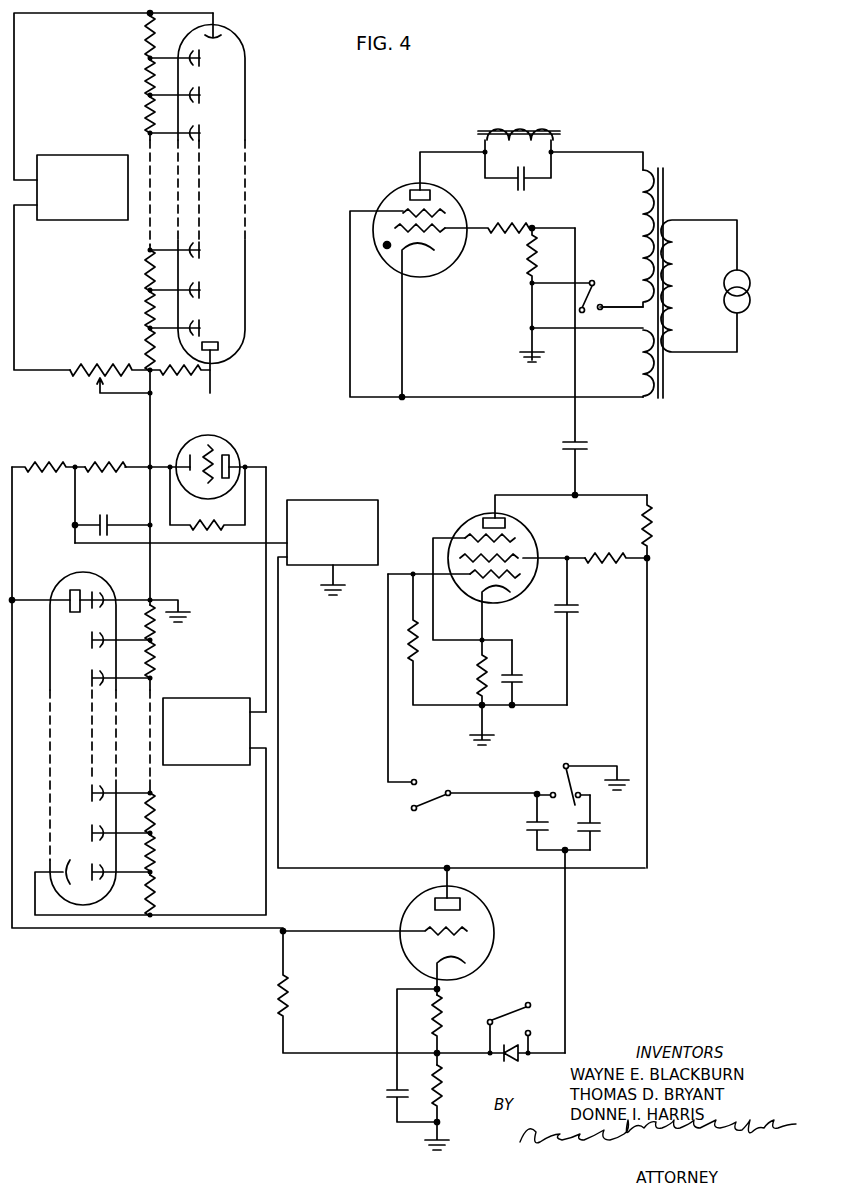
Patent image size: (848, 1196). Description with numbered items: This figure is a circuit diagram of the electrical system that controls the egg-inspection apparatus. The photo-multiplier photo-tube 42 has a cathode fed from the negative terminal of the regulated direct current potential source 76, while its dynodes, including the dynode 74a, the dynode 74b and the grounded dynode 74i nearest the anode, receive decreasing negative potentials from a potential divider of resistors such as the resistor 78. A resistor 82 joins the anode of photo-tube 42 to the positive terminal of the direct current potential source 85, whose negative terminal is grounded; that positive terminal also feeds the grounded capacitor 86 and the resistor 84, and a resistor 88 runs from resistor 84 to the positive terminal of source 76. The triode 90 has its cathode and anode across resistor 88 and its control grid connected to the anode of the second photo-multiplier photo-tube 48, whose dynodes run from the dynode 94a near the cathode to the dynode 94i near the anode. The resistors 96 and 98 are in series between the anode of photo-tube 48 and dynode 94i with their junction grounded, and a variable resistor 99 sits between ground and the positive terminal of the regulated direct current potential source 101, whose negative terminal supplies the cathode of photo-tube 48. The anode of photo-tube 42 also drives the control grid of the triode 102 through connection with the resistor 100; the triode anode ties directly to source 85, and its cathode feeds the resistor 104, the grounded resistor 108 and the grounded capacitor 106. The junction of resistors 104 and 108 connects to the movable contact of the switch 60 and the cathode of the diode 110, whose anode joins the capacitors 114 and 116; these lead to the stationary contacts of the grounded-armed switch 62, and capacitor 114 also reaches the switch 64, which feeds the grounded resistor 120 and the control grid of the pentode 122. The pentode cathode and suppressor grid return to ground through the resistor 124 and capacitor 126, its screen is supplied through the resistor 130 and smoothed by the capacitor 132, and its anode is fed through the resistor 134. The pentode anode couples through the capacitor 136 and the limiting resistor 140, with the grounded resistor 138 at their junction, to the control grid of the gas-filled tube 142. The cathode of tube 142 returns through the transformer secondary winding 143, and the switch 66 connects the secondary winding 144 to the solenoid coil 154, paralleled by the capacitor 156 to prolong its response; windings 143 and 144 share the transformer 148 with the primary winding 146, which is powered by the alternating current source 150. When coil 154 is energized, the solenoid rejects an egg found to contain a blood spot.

The direct current potential source 101 is at (77, 155).
The photo-multiplier photo-tube 48 is at (243, 270).
The dynode 94a is at (203, 52).
The dynode 94i is at (203, 331).
The resistor 98 is at (145, 352).
The variable resistor 99 is at (85, 380).
The resistor 96 is at (185, 378).
The triode 90 is at (222, 447).
The resistor 82 is at (41, 456).
The resistor 84 is at (99, 456).
The capacitor 86 is at (104, 517).
The resistor 88 is at (210, 533).
The photo-multiplier photo-tube 42 is at (68, 578).
The dynode 74i is at (97, 599).
The dynode 74b is at (92, 835).
The dynode 74a is at (90, 868).
The resistor 78 is at (151, 900).
The direct current potential source 76 is at (205, 698).
The direct current potential source 85 is at (378, 502).
The gas-filled tube 142 is at (440, 280).
The solenoid coil 154 is at (497, 125).
The capacitor 156 is at (520, 192).
The limiting resistor 140 is at (516, 226).
The resistor 138 is at (530, 263).
The switch 66 is at (610, 300).
The transformer secondary winding 144 is at (642, 210).
The transformer 148 is at (661, 170).
The transformer secondary winding 143 is at (648, 398).
The primary winding 146 is at (678, 244).
The alternating current source 150 is at (752, 273).
The capacitor 136 is at (563, 446).
The pentode 122 is at (525, 528).
The resistor 134 is at (650, 513).
The resistor 130 is at (600, 563).
The capacitor 132 is at (582, 613).
The resistor 120 is at (418, 654).
The resistor 124 is at (478, 680).
The capacitor 126 is at (520, 680).
The switch 64 is at (415, 797).
The switch 62 is at (567, 790).
The capacitor 114 is at (527, 829).
The capacitor 116 is at (603, 829).
The triode 102 is at (488, 955).
The resistor 100 is at (278, 988).
The resistor 104 is at (443, 1015).
The resistor 108 is at (432, 1086).
The capacitor 106 is at (386, 1098).
The diode 110 is at (507, 1064).
The switch 60 is at (527, 1022).